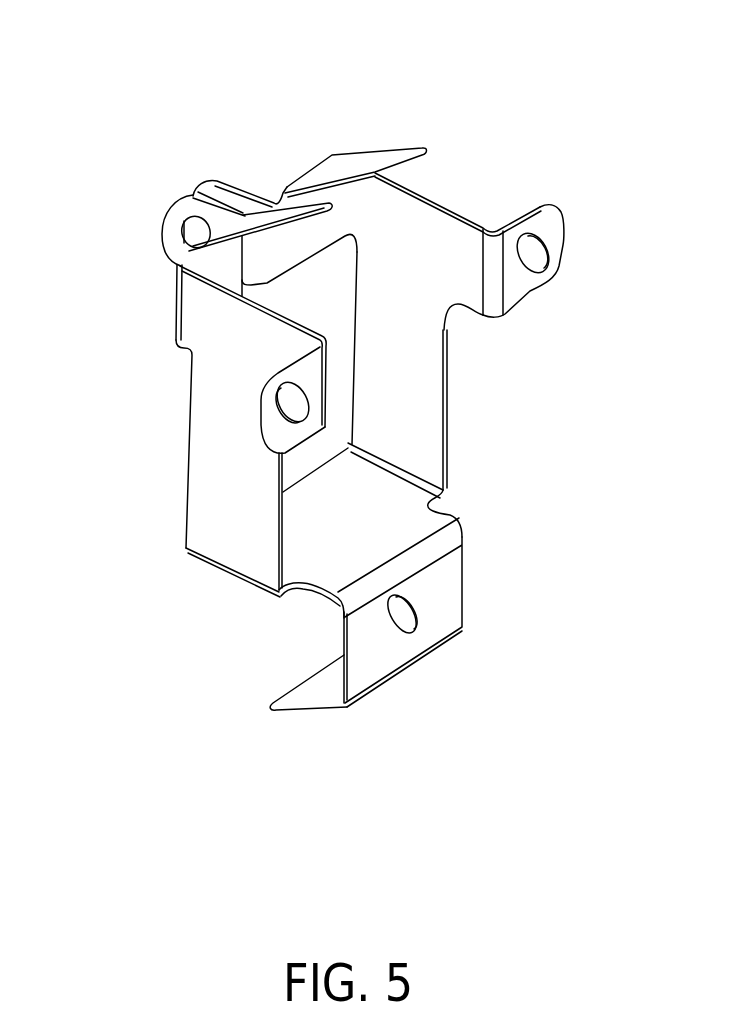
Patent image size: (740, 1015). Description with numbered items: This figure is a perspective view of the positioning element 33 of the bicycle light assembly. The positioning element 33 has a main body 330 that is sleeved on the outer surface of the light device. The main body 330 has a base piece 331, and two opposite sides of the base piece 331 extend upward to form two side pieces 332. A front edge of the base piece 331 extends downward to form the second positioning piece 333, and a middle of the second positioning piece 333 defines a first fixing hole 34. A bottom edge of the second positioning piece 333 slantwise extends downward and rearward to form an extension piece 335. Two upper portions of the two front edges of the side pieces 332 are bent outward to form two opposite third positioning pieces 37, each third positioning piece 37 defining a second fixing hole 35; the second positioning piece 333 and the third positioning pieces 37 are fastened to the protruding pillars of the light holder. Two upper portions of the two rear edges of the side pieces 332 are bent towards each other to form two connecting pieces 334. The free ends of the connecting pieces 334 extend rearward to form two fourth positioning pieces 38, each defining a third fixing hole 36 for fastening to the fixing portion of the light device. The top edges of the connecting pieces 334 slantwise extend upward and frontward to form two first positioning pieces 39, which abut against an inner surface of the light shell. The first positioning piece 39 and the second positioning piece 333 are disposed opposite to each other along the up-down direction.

The positioning element 33 is at (360, 364).
The main body 330 is at (225, 568).
The base piece 331 is at (395, 533).
The side piece 332 is at (420, 413).
The second positioning piece 333 is at (472, 622).
The connecting piece 334 is at (180, 266).
The extension piece 335 is at (290, 697).
The first fixing hole 34 is at (433, 620).
The second fixing hole 35 is at (280, 408).
The third fixing hole 36 is at (217, 190).
The third positioning piece 37 is at (532, 225).
The fourth positioning piece 38 is at (219, 185).
The first positioning piece 39 is at (366, 167).